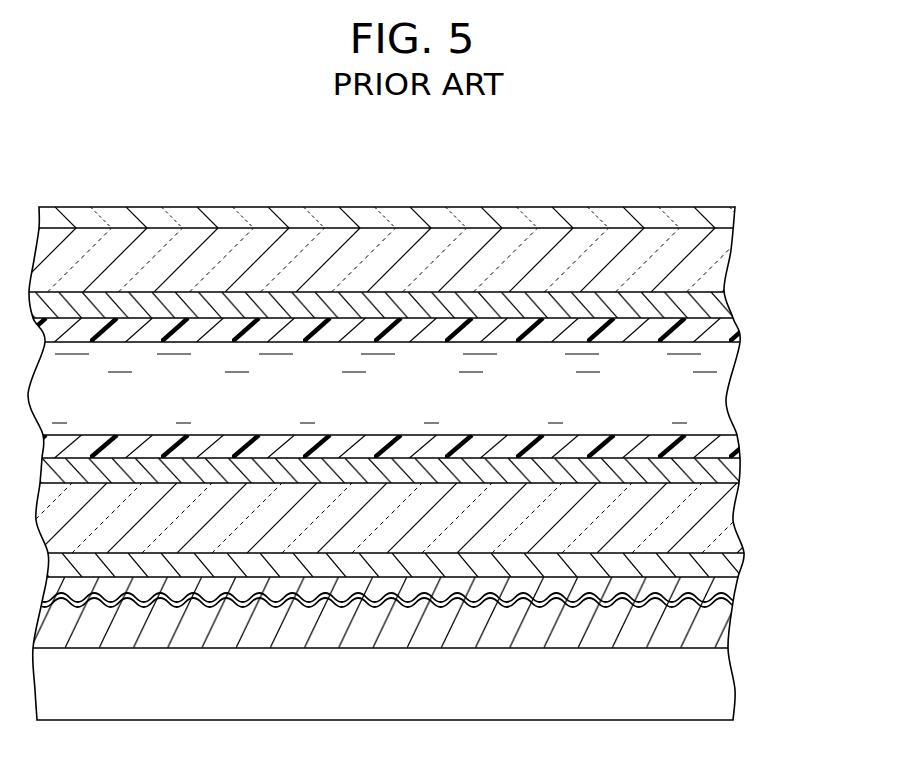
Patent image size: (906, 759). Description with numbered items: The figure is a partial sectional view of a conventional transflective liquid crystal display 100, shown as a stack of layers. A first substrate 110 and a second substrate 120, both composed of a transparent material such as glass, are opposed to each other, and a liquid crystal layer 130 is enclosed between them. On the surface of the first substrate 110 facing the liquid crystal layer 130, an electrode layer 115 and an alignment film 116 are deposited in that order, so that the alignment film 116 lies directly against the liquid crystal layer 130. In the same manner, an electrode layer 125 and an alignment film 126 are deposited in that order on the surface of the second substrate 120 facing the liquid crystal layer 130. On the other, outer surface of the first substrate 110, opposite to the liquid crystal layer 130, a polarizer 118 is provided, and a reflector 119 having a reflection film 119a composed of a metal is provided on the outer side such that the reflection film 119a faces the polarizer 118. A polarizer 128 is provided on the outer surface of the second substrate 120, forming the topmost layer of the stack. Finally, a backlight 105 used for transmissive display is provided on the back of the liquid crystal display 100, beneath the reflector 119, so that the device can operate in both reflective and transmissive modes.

The transflective liquid crystal display 100 is at (665, 187).
The polarizer 128 is at (723, 218).
The second substrate 120 is at (715, 248).
The electrode layer 125 is at (713, 305).
The alignment film 126 is at (720, 329).
The liquid crystal layer 130 is at (693, 390).
The alignment film 116 is at (720, 445).
The electrode layer 115 is at (723, 475).
The first substrate 110 is at (707, 531).
The polarizer 118 is at (718, 567).
The reflector 119 is at (718, 625).
The reflection film 119a is at (722, 605).
The backlight 105 is at (718, 687).